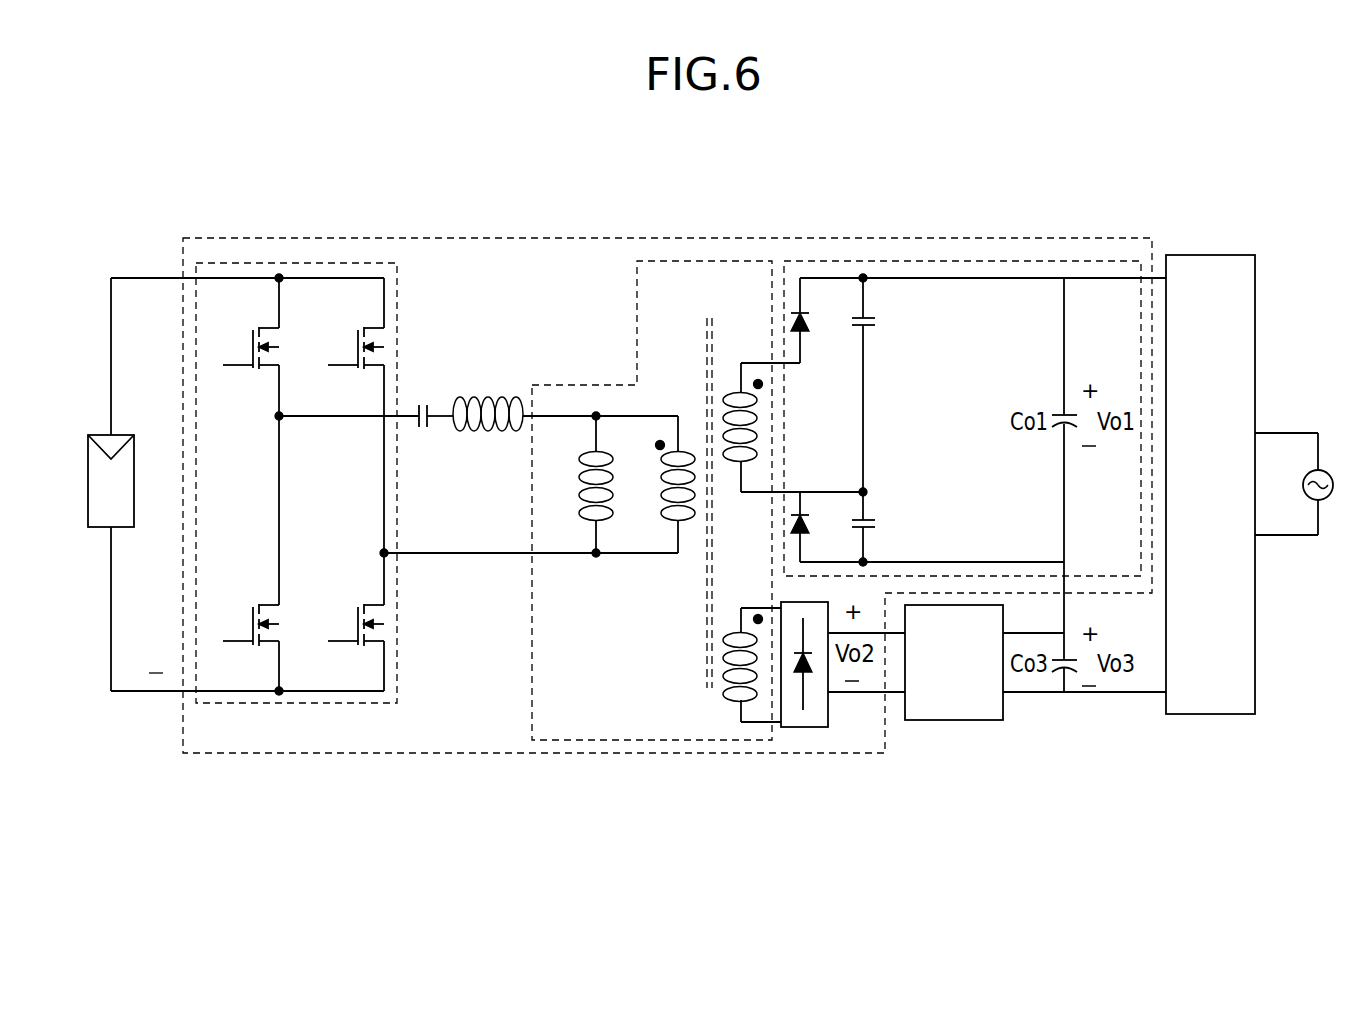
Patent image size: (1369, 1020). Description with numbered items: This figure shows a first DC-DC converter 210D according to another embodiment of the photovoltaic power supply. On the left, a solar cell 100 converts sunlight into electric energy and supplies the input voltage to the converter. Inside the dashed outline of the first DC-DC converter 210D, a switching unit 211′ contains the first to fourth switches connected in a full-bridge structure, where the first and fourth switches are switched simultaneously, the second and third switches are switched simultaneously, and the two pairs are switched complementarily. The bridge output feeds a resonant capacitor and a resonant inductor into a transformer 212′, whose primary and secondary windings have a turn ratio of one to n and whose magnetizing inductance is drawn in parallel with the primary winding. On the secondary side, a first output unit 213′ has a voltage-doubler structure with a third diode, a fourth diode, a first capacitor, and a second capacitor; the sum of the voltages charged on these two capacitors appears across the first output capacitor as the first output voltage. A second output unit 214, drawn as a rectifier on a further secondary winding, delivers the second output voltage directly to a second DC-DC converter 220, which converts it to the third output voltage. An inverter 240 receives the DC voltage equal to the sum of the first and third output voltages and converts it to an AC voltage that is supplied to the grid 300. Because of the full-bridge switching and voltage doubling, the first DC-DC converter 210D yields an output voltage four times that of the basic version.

The solar cell 100 is at (125, 435).
The first DC-DC converter 210D is at (565, 237).
The switching unit 211′ is at (397, 300).
The transformer 212′ is at (583, 385).
The first output unit 213′ is at (903, 260).
The second output unit 214 is at (803, 728).
The second DC-DC converter 220 is at (955, 722).
The inverter 240 is at (1208, 254).
The grid 300 is at (1305, 500).